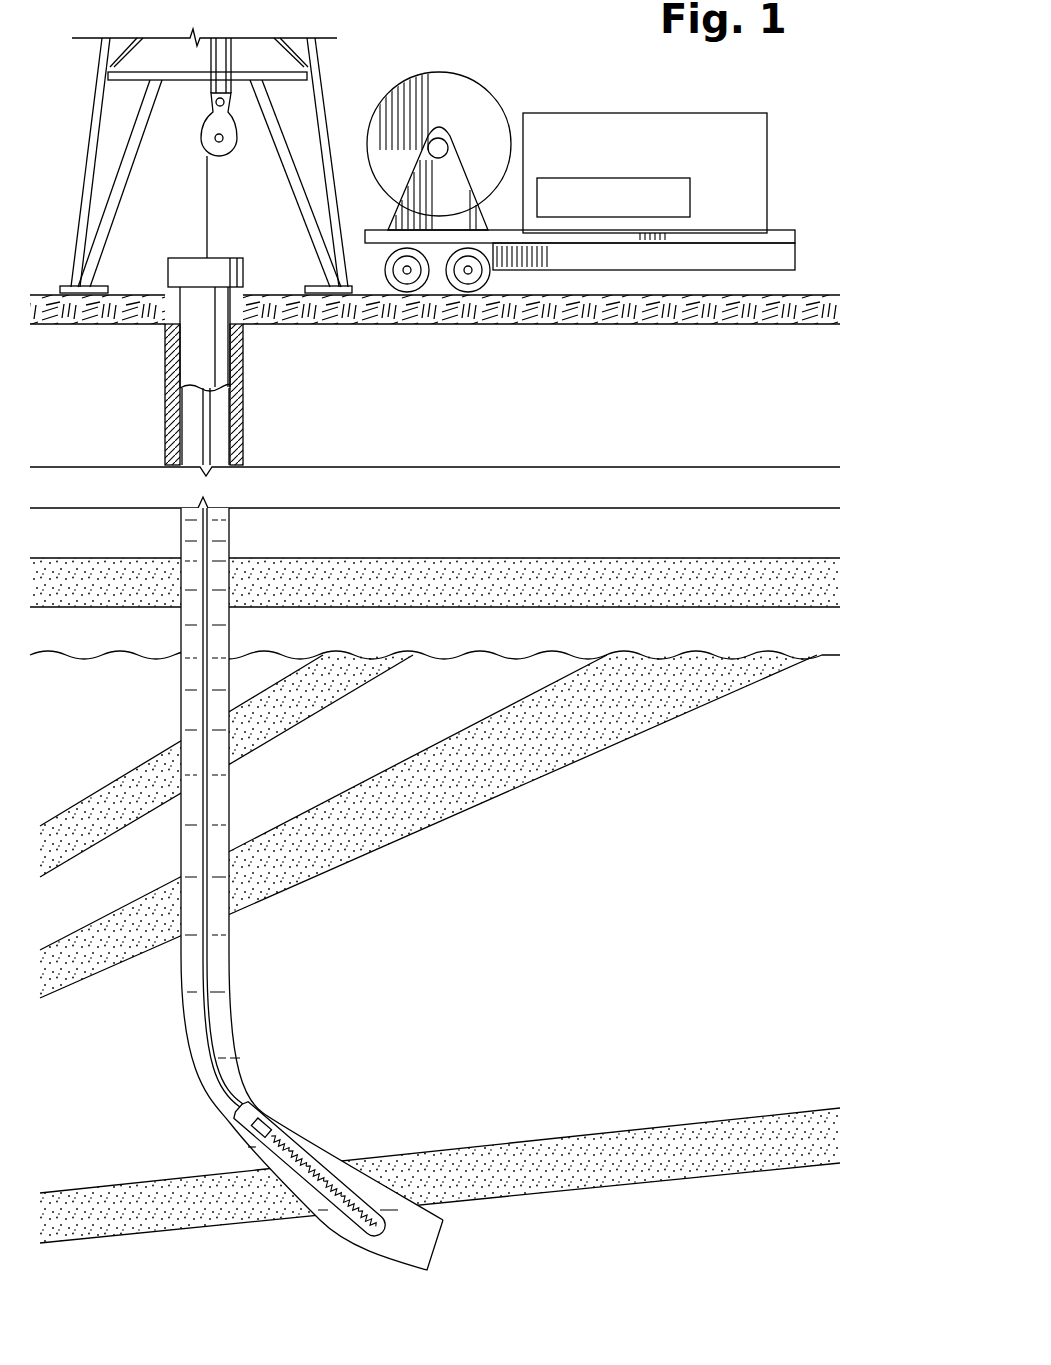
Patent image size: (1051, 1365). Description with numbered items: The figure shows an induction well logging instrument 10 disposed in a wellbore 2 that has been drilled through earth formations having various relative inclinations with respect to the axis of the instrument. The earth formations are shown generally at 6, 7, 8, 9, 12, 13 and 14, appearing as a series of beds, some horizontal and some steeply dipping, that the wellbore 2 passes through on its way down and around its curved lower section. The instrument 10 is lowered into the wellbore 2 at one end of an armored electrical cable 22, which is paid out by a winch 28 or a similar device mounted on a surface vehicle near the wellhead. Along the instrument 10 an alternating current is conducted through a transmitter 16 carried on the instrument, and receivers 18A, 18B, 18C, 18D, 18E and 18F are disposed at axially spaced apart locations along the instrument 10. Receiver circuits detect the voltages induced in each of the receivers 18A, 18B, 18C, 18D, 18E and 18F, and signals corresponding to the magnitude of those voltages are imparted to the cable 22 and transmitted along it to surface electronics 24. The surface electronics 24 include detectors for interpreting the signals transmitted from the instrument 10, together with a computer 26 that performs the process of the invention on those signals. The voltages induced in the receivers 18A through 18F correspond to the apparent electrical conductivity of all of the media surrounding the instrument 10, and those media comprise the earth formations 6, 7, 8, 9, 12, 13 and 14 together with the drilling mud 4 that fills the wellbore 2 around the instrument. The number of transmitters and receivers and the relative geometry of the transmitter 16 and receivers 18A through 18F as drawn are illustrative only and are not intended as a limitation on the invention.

The wellbore 2 is at (186, 677).
The drilling mud 4 is at (195, 722).
The earth formation 6 is at (93, 593).
The earth formation 7 is at (97, 713).
The earth formation 8 is at (102, 833).
The earth formation 9 is at (98, 903).
The induction well logging instrument 10 is at (279, 1169).
The earth formation 12 is at (547, 982).
The earth formation 13 is at (95, 967).
The earth formation 14 is at (95, 1227).
The transmitter 16 is at (370, 1240).
The receiver 18A is at (366, 1219).
The receiver 18B is at (349, 1204).
The receiver 18C is at (332, 1189).
The receiver 18D is at (314, 1174).
The receiver 18E is at (297, 1159).
The receiver 18F is at (279, 1144).
The armored electrical cable 22 is at (203, 207).
The surface electronics 24 is at (645, 150).
The computer 26 is at (690, 195).
The winch 28 is at (460, 77).